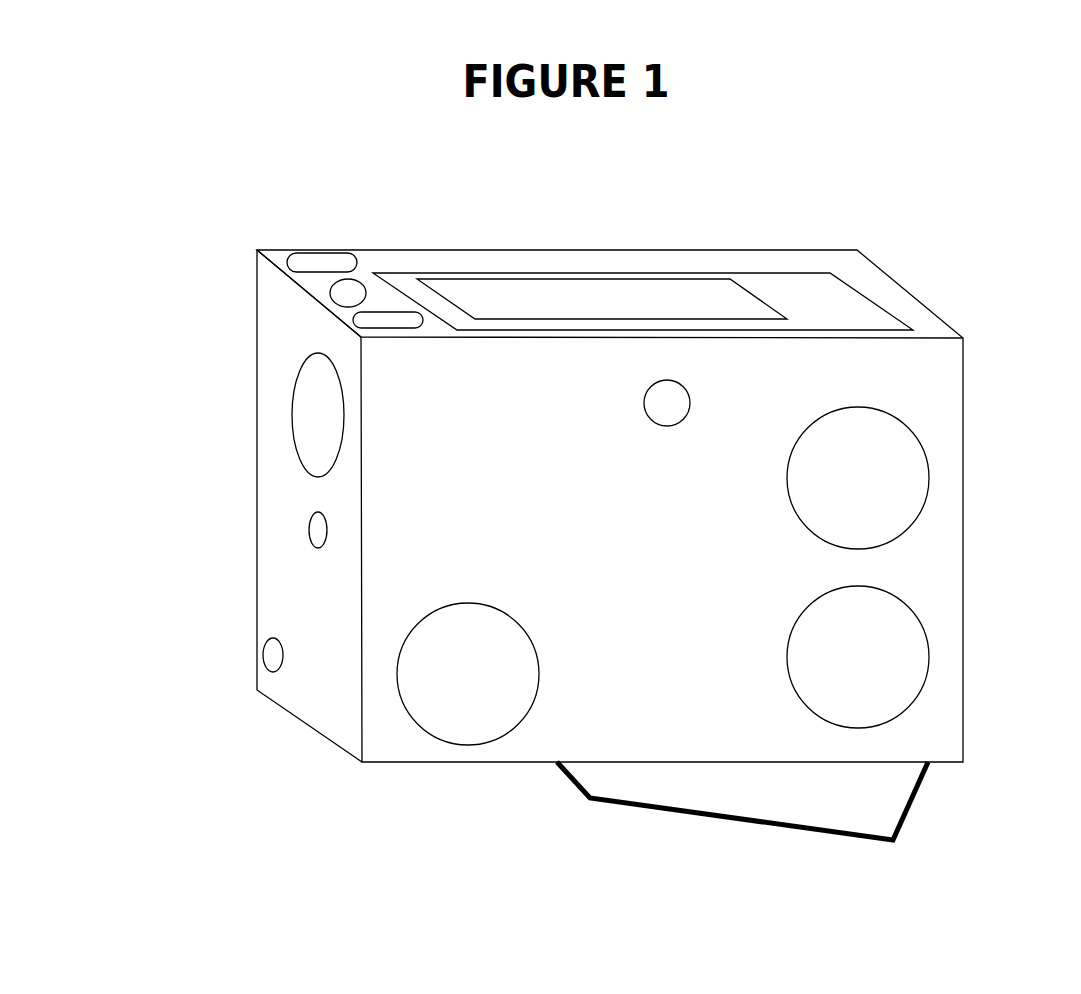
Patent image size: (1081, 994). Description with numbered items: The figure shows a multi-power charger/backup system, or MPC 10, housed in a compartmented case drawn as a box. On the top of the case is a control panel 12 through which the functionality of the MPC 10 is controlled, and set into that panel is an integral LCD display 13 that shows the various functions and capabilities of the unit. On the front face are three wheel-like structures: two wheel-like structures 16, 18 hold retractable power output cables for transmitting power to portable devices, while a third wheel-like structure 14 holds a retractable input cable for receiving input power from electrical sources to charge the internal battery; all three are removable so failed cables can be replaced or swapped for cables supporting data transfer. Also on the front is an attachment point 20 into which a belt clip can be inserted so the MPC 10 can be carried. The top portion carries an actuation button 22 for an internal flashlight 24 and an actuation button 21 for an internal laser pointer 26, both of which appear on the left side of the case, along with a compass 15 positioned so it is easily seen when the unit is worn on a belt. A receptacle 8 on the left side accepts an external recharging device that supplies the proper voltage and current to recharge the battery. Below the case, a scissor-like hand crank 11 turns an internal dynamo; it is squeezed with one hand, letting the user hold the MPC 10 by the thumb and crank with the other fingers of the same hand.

The receptacle 8 is at (263, 660).
The multi-power charger/backup system 10 is at (237, 337).
The hand crank 11 is at (917, 802).
The control panel 12 is at (820, 303).
The LCD display 13 is at (697, 303).
The wheel-like structure 14 is at (450, 727).
The compass 15 is at (355, 282).
The wheel-like structure 16 is at (929, 477).
The wheel-like structure 18 is at (929, 653).
The attachment point 20 is at (645, 403).
The actuation button 21 is at (383, 329).
The actuation button 22 is at (320, 253).
The internal flashlight 24 is at (297, 455).
The internal laser pointer 26 is at (309, 538).